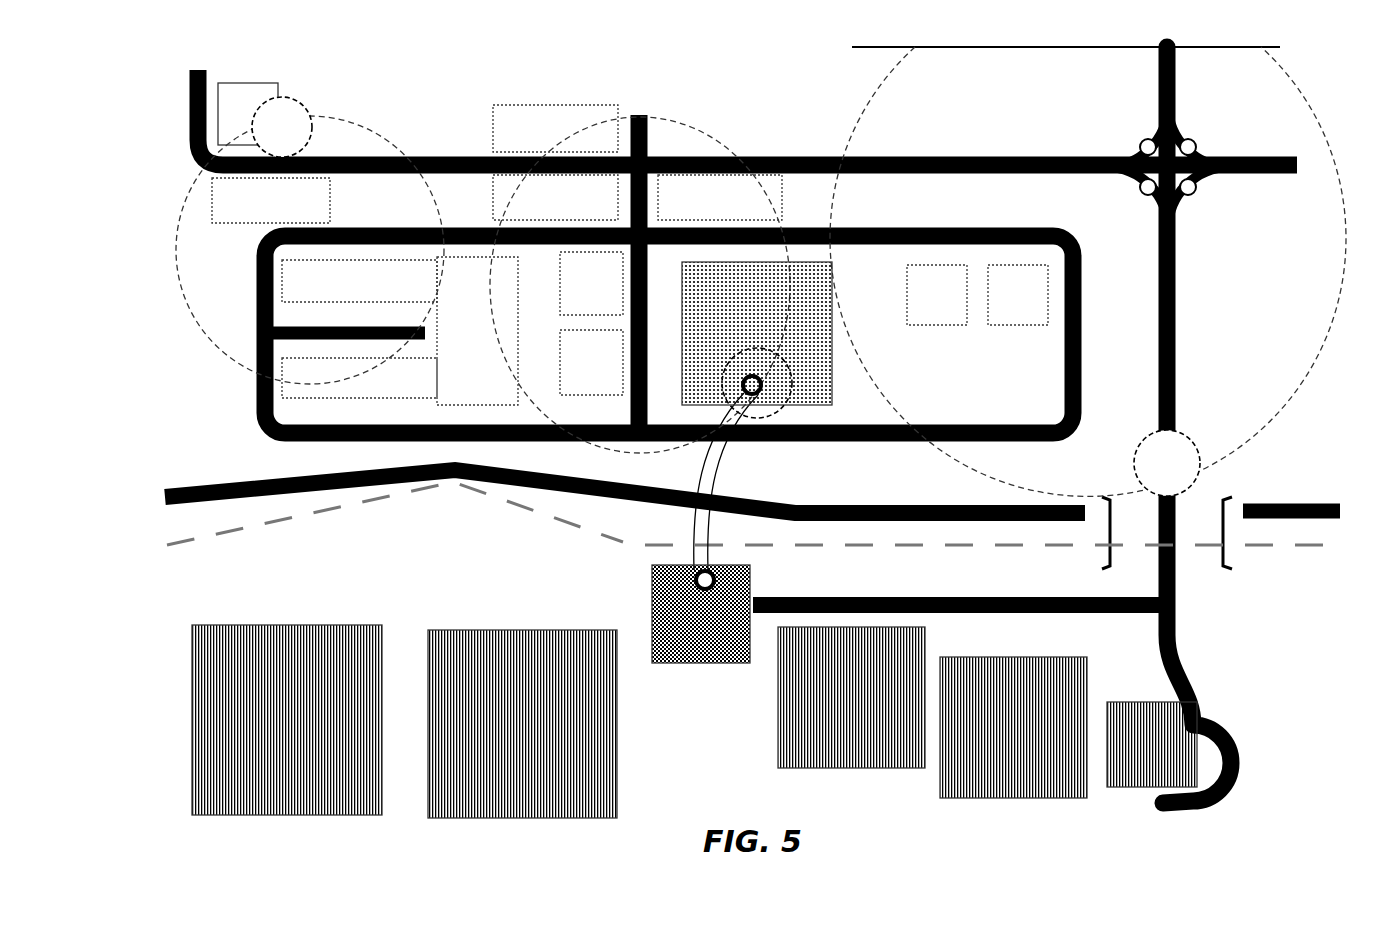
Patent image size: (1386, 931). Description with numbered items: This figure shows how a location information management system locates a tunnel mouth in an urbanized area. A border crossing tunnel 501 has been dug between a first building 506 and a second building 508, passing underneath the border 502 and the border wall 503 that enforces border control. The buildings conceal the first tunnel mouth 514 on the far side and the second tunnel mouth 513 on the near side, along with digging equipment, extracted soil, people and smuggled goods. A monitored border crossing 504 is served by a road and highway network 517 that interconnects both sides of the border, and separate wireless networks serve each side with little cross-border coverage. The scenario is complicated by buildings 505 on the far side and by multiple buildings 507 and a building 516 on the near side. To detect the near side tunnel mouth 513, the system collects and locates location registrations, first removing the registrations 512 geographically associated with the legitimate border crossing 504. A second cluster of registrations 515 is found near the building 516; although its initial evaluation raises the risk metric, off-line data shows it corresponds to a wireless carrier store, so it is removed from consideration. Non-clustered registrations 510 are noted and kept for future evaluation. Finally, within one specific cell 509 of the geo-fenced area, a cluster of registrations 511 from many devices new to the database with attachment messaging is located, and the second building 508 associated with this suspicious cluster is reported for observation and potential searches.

The border crossing tunnel 501 is at (740, 485).
The border 502 is at (343, 525).
The border wall 503 is at (322, 462).
The monitored border crossing 504 is at (1204, 490).
The buildings 505 is at (694, 721).
The first building 506 is at (697, 682).
The buildings 507 is at (630, 255).
The second building 508 is at (845, 272).
The cell 509 is at (705, 118).
The non-clustered registrations 510 is at (998, 407).
The cluster of registrations 511 is at (805, 418).
The registrations associated with the legitimate border crossing 512 is at (1212, 440).
The second tunnel mouth 513 is at (770, 345).
The first tunnel mouth 514 is at (683, 593).
The second cluster of registrations 515 is at (330, 134).
The building 516 is at (296, 72).
The road and highway network 517 is at (165, 121).